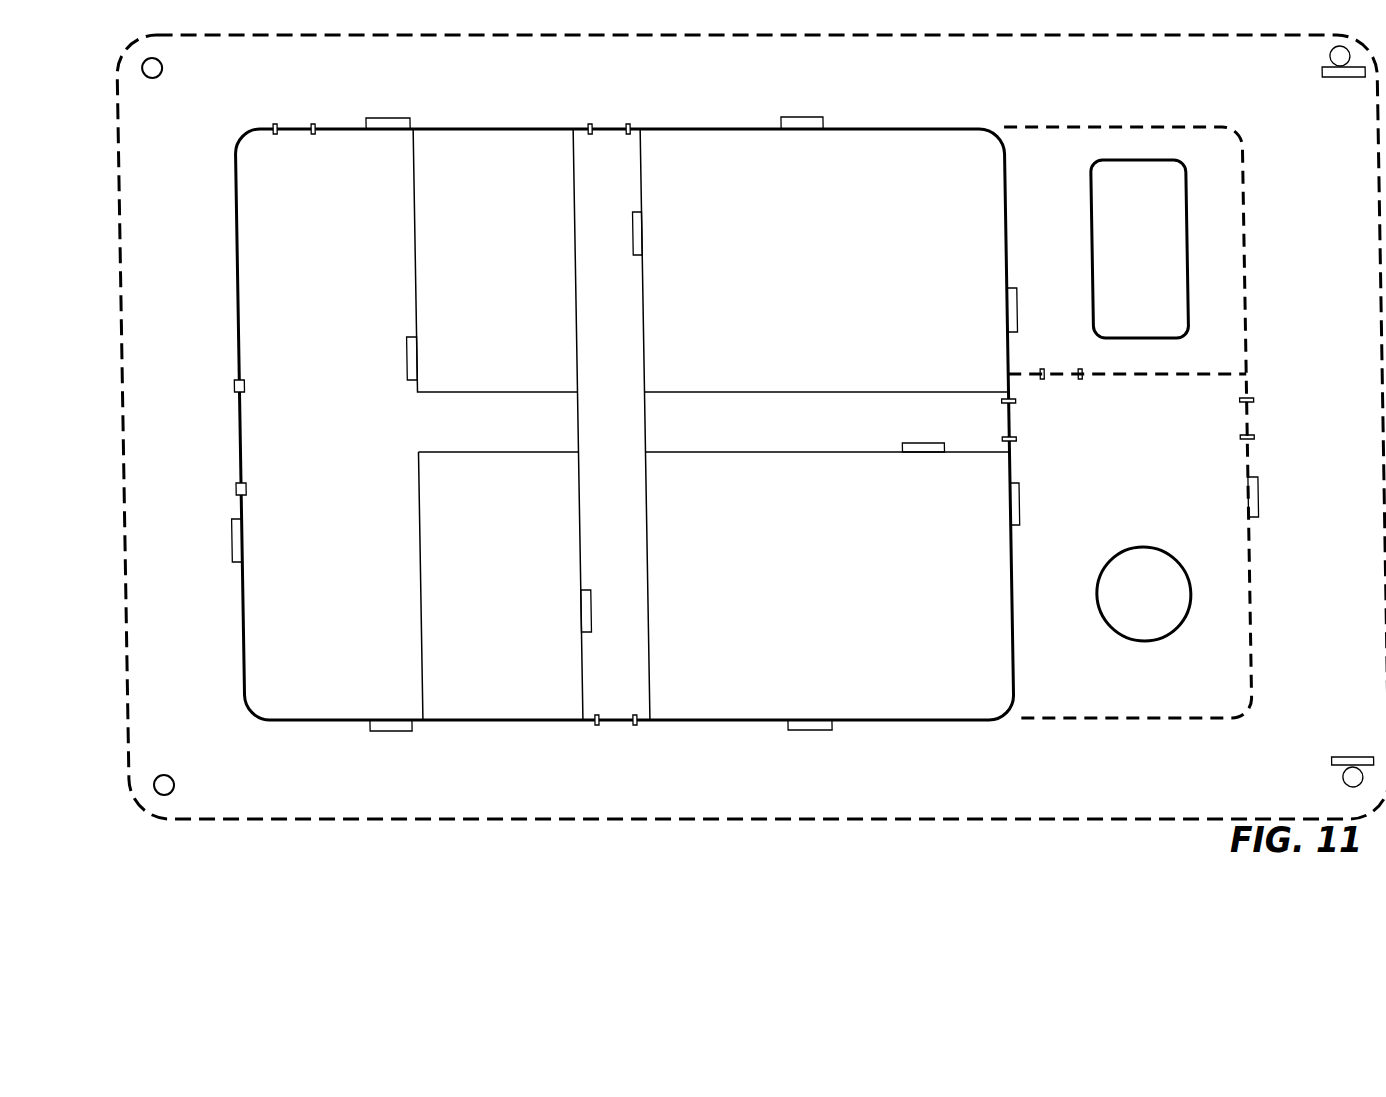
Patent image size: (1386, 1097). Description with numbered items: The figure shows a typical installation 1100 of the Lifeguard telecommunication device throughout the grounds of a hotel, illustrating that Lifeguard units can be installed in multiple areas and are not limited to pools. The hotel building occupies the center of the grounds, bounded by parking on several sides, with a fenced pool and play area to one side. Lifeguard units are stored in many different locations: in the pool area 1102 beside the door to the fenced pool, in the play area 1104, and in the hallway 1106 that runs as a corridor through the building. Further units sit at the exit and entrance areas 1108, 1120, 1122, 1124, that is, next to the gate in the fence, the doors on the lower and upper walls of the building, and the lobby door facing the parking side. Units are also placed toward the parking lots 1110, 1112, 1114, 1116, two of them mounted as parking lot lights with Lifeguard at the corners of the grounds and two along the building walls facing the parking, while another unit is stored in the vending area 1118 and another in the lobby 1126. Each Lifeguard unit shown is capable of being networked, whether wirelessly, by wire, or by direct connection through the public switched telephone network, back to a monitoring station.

The typical installation 1100 is at (1197, 851).
The pool area 1102 is at (1010, 306).
The play area 1104 is at (1012, 507).
The hallway 1106 is at (920, 452).
The exit entrance area 1108 is at (1252, 497).
The parking lot 1110 is at (1339, 81).
The parking lot 1112 is at (1336, 757).
The parking lot 1114 is at (800, 730).
The parking lot 1116 is at (803, 117).
The vending area 1118 is at (581, 612).
The exit entrance area 1120 is at (378, 733).
The exit entrance area 1122 is at (386, 118).
The exit entrance area 1124 is at (225, 543).
The lobby 1126 is at (403, 360).